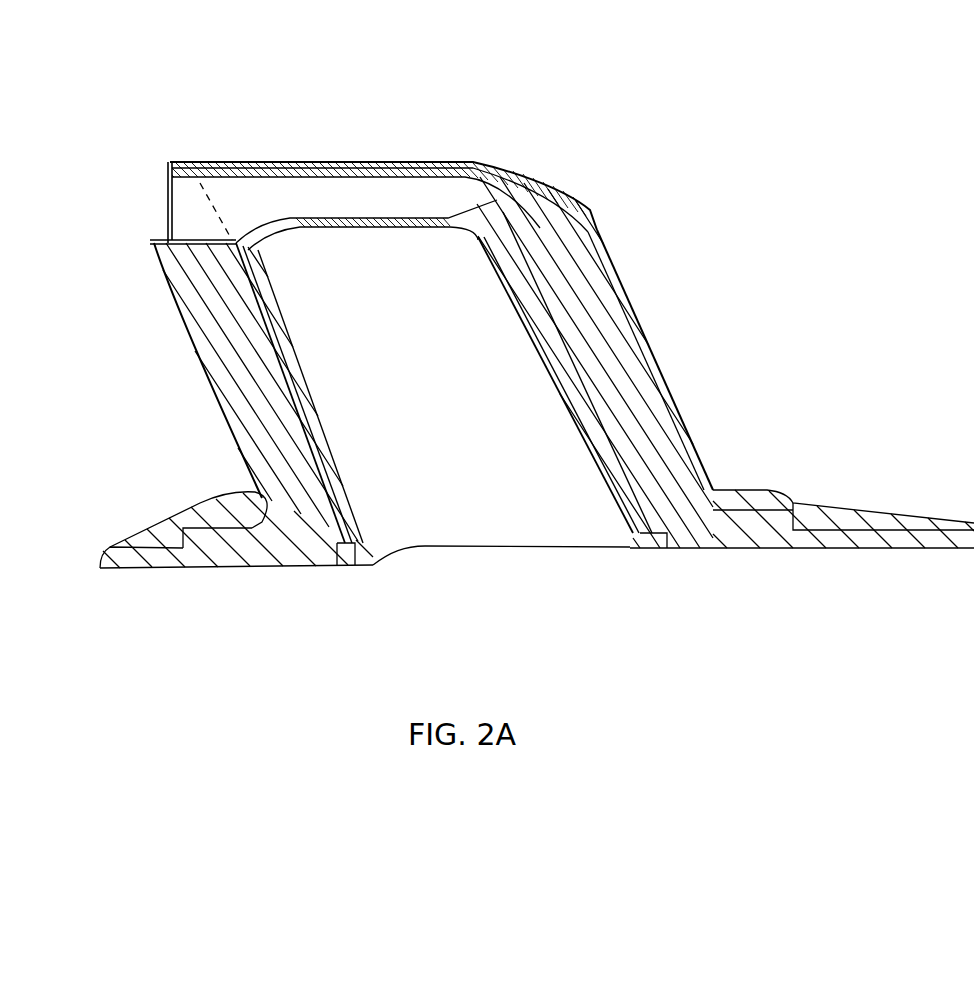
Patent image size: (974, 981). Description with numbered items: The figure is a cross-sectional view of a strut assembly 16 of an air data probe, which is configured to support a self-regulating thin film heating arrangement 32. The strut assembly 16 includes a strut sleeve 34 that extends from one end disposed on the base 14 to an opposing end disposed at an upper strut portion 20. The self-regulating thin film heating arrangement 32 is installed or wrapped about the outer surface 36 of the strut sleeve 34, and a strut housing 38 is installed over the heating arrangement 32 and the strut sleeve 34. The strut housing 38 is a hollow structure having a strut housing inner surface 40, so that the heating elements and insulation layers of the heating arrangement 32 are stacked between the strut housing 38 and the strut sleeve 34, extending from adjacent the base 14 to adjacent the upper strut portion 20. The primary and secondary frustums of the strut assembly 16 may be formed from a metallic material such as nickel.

The strut assembly 16 is at (830, 115).
The upper strut portion 20 is at (318, 220).
The self-regulating thin film heating arrangement 32 is at (270, 357).
The strut housing 38 is at (237, 403).
The strut housing inner surface 40 is at (545, 324).
The outer surface of the strut sleeve 36 is at (330, 487).
The strut sleeve 34 is at (418, 543).
The base 14 is at (762, 549).